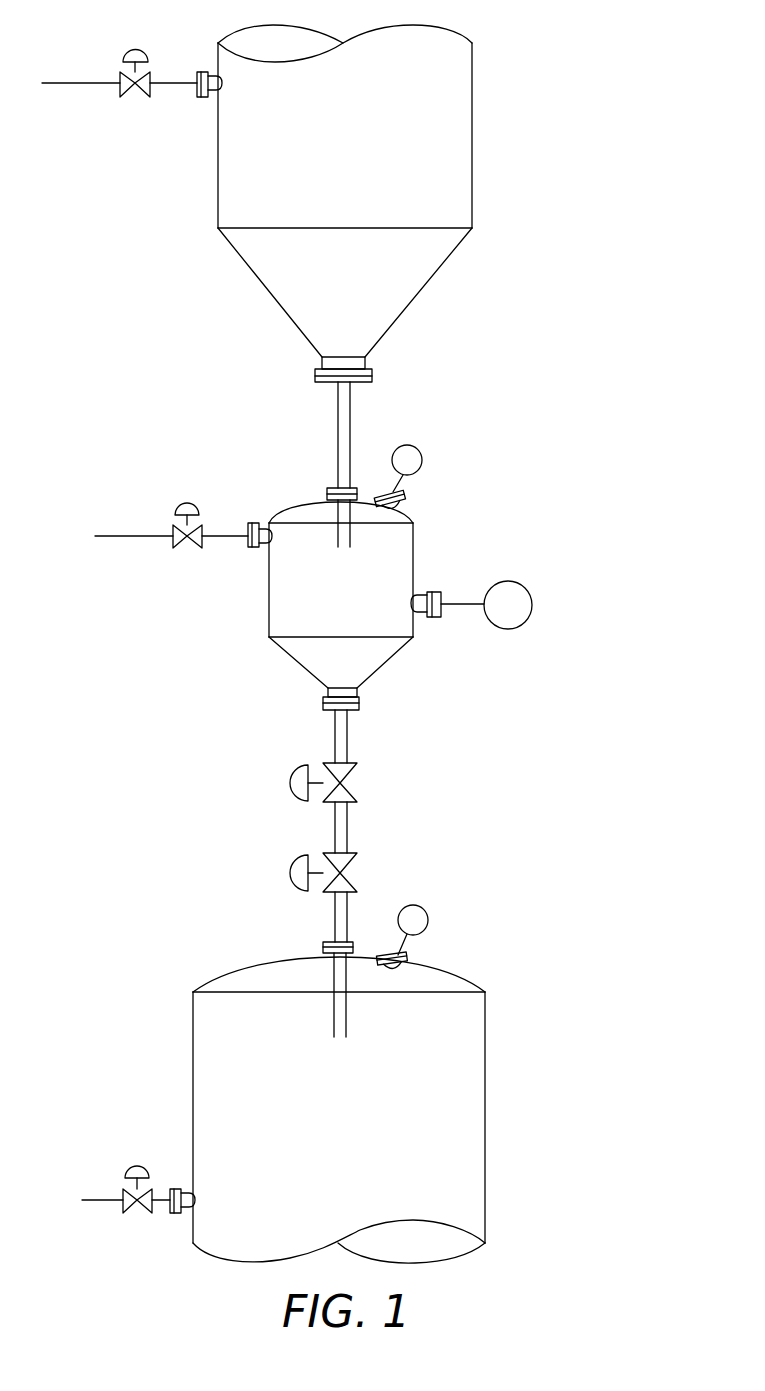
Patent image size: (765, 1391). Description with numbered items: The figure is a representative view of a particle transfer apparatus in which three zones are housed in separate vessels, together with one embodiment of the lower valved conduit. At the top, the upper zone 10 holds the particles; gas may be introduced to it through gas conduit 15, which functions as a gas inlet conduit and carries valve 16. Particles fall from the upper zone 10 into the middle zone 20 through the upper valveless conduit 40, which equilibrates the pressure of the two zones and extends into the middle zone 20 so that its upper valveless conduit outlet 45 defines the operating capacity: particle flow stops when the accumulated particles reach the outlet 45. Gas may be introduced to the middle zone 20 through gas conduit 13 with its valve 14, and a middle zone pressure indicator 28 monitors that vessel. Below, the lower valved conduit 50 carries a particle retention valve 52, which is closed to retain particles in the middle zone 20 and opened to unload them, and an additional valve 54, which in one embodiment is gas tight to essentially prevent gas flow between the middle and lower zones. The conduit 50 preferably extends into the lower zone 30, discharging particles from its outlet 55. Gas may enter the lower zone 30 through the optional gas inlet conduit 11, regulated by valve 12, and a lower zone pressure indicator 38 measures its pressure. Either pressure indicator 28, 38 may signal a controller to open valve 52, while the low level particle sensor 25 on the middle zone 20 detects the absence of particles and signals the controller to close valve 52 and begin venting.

The upper zone 10 is at (472, 104).
The gas inlet conduit 11 is at (100, 1198).
The valve 12 is at (139, 1166).
The gas conduit 13 is at (120, 535).
The valve 14 is at (187, 503).
The gas conduit 15 is at (68, 83).
The valve 16 is at (135, 50).
The middle zone 20 is at (413, 548).
The low level particle sensor 25 is at (527, 585).
The middle zone pressure indicator 28 is at (420, 453).
The lower zone 30 is at (485, 1022).
The lower zone pressure indicator 38 is at (428, 914).
The upper valveless conduit 40 is at (345, 410).
The upper valveless conduit outlet 45 is at (341, 555).
The lower valved conduit 50 is at (346, 737).
The valve 52 is at (292, 770).
The valve 54 is at (292, 860).
The outlet 55 is at (340, 1043).